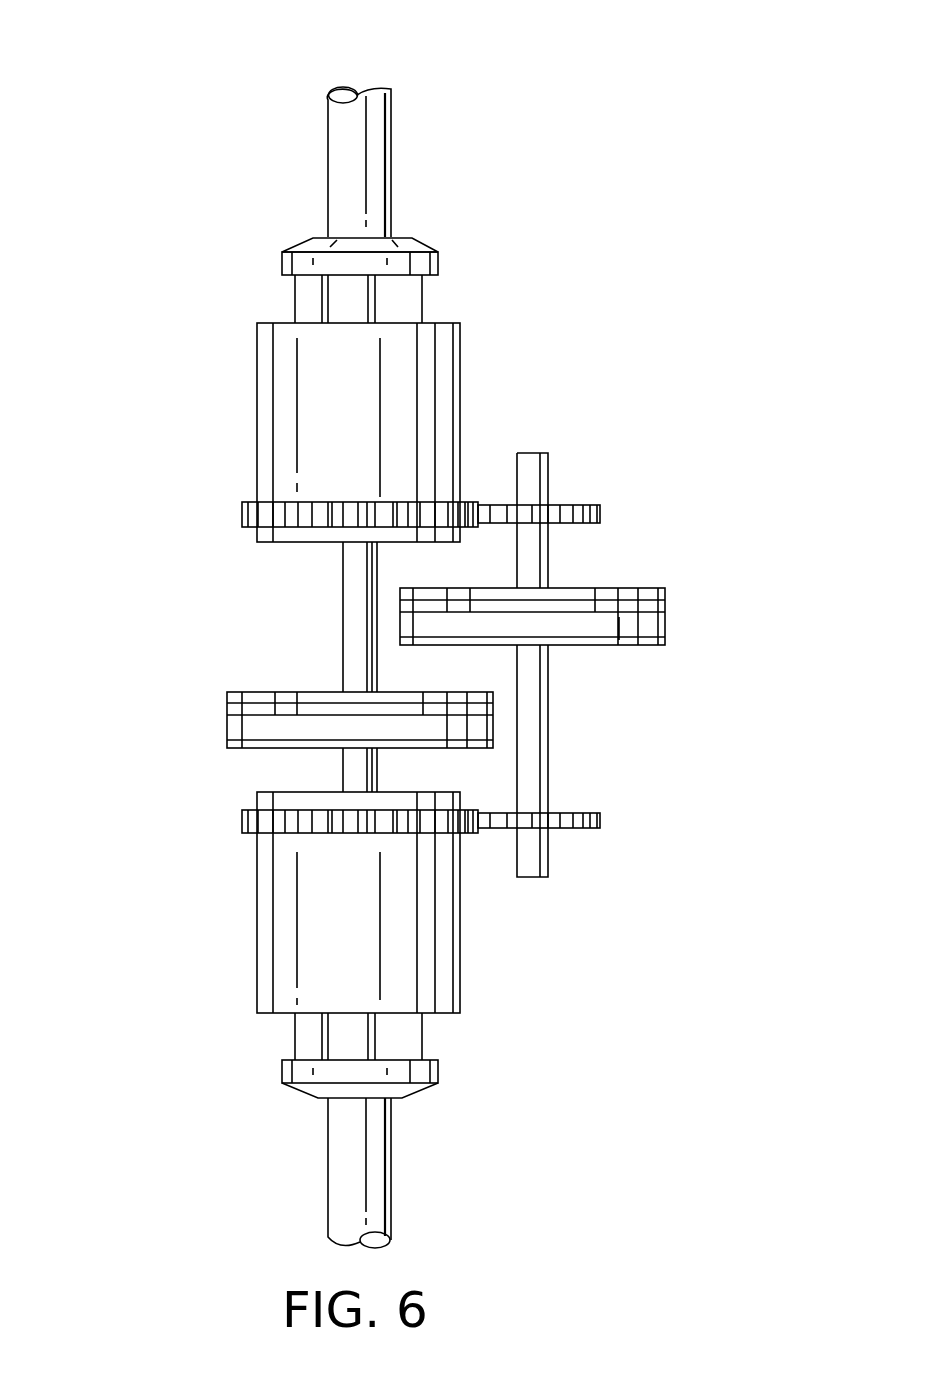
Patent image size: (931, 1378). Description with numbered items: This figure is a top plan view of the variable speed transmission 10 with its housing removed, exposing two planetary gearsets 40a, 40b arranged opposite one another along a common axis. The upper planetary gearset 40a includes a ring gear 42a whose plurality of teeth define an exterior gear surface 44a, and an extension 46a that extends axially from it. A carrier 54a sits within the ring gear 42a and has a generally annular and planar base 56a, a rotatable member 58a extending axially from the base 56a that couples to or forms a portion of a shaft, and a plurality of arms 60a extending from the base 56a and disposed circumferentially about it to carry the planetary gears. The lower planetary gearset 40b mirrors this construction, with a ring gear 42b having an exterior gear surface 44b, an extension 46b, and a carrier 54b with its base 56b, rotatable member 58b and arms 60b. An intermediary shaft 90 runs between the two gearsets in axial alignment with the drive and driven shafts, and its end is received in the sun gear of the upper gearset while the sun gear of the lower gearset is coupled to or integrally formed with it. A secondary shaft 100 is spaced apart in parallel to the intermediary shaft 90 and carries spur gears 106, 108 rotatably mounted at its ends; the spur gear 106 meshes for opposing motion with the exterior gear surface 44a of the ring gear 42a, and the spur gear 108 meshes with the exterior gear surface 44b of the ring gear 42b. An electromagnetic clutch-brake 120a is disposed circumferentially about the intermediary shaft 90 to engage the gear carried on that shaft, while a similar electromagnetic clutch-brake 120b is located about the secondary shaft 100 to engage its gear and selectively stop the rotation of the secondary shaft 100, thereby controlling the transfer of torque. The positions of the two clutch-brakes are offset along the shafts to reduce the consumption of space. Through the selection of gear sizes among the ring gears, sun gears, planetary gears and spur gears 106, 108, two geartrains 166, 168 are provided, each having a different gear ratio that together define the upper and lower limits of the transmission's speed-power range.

The variable speed transmission 10 is at (197, 66).
The planetary gearset 40a is at (196, 352).
The planetary gearset 40b is at (203, 974).
The ring gear 42a is at (473, 383).
The ring gear 42b is at (473, 946).
The exterior gear surface 44a is at (242, 508).
The exterior gear surface 44b is at (242, 822).
The extension 46a is at (257, 425).
The extension 46b is at (257, 908).
The carrier 54a is at (404, 150).
The carrier 54b is at (318, 1177).
The base 56a is at (272, 260).
The base 56b is at (272, 1078).
The rotatable member 58a is at (326, 161).
The rotatable member 58b is at (392, 1170).
The arms 60a is at (425, 300).
The arms 60b is at (422, 1040).
The intermediary shaft 90 is at (343, 642).
The secondary shaft 100 is at (553, 540).
The spur gear 106 is at (600, 514).
The spur gear 108 is at (600, 822).
The electromagnetic clutch-brake 120a is at (216, 724).
The electromagnetic clutch-brake 120b is at (677, 619).
The geartrain 166 is at (260, 600).
The geartrain 168 is at (636, 703).